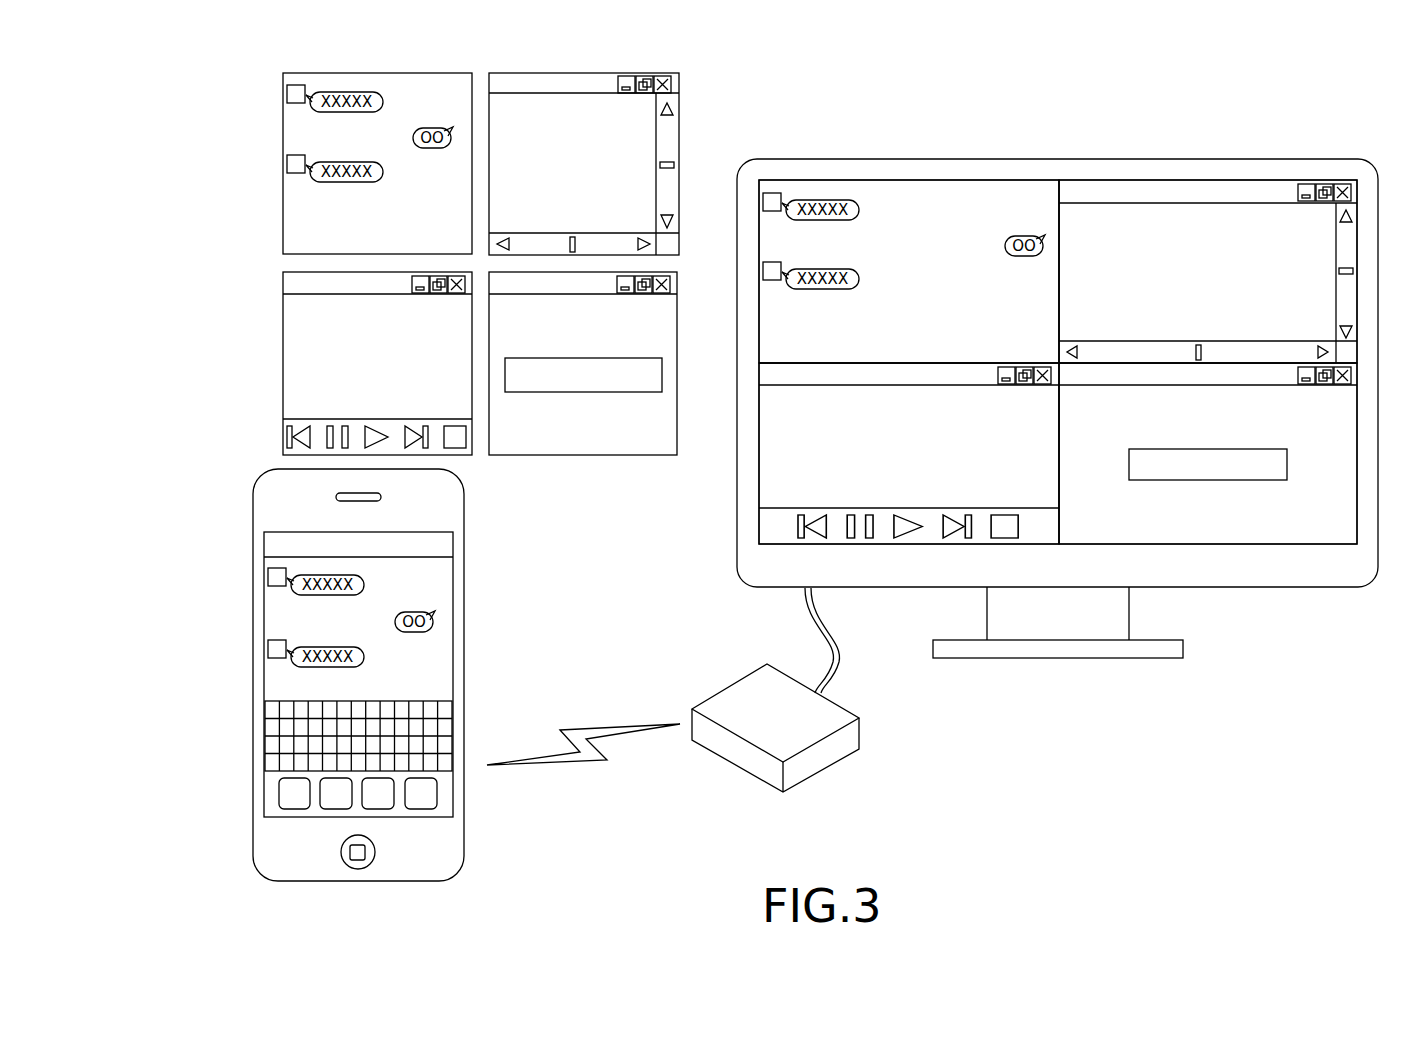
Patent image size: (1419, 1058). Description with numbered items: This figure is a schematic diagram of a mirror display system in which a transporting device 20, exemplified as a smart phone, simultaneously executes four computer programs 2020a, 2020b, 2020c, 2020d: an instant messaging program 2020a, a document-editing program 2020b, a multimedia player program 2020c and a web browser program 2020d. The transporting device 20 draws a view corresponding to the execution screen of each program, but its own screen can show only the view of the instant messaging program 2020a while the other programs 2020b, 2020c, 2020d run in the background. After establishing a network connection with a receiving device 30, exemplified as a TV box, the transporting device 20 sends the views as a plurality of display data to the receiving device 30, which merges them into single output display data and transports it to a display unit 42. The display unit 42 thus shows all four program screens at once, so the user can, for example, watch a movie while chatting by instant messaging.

The transporting device 20 is at (340, 676).
The receiving device 30 is at (733, 693).
The display unit 42 is at (999, 369).
The computer program 2020a is at (263, 848).
The computer program 2020b is at (317, 848).
The computer program 2020c is at (399, 848).
The computer program 2020d is at (453, 848).